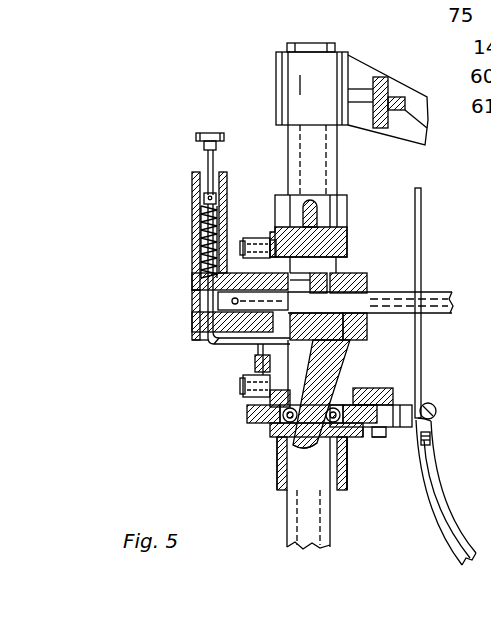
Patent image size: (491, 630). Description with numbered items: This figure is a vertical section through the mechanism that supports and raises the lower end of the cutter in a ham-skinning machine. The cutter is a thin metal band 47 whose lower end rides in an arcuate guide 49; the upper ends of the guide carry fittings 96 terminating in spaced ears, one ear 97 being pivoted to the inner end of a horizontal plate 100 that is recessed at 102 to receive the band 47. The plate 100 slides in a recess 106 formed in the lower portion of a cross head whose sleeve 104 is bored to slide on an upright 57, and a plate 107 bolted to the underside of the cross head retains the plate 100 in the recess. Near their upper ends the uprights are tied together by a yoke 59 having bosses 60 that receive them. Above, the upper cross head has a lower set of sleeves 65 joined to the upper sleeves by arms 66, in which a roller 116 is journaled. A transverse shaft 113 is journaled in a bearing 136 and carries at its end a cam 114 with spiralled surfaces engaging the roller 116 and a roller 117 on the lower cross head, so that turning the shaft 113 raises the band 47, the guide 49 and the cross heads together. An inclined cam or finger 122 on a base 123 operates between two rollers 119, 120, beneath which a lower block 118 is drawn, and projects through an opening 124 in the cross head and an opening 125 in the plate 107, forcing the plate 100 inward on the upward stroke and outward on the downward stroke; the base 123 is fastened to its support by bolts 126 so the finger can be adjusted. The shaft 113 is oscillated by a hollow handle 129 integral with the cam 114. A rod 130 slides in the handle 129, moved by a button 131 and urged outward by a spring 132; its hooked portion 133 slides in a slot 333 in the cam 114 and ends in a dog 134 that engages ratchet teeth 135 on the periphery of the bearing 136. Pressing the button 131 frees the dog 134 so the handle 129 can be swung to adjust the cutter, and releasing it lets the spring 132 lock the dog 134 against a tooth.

The thin metal band 47 is at (422, 218).
The guide 49 is at (458, 540).
The upright 57 is at (313, 44).
The yoke 59 is at (380, 78).
The bosses 60 is at (287, 64).
The lower set of sleeves 65 is at (338, 203).
The arms 66 is at (348, 220).
The fittings 96 is at (430, 437).
The ear 97 is at (436, 411).
The plate 100 is at (385, 438).
The recess 102 is at (406, 413).
The sleeve 104 is at (323, 473).
The recess 106 is at (375, 395).
The plate 107 is at (367, 440).
The transverse shaft 113 is at (436, 296).
The cam 114 is at (260, 367).
The roller 116 is at (256, 236).
The roller 117 is at (345, 363).
The lower block 118 is at (272, 437).
The roller 119 is at (247, 417).
The roller 120 is at (320, 458).
The inclined cam or finger 122 is at (292, 442).
The base 123 is at (373, 347).
The opening 124 is at (393, 392).
The opening 125 is at (349, 475).
The bolts 126 is at (352, 275).
The handle 129 is at (192, 229).
The rod 130 is at (204, 163).
The button 131 is at (205, 137).
The spring 132 is at (198, 246).
The hooked portion 133 is at (206, 346).
The dog 134 is at (258, 353).
The ratchet teeth 135 is at (207, 322).
The bearing 136 is at (346, 271).
The slot 333 is at (243, 388).